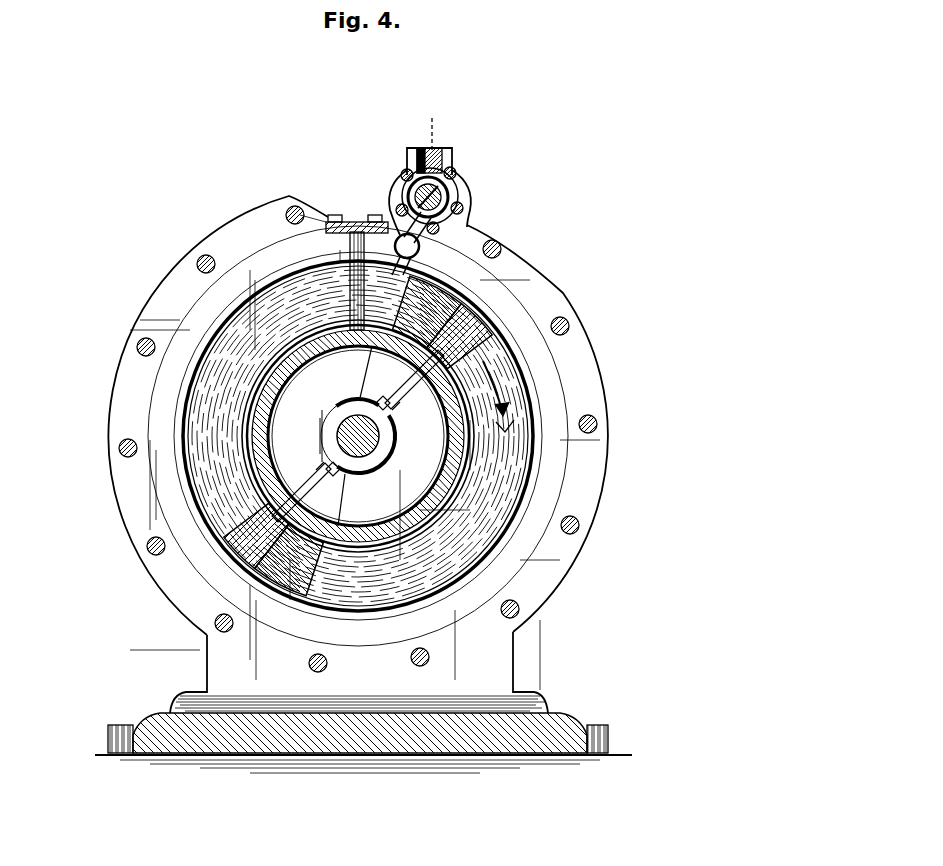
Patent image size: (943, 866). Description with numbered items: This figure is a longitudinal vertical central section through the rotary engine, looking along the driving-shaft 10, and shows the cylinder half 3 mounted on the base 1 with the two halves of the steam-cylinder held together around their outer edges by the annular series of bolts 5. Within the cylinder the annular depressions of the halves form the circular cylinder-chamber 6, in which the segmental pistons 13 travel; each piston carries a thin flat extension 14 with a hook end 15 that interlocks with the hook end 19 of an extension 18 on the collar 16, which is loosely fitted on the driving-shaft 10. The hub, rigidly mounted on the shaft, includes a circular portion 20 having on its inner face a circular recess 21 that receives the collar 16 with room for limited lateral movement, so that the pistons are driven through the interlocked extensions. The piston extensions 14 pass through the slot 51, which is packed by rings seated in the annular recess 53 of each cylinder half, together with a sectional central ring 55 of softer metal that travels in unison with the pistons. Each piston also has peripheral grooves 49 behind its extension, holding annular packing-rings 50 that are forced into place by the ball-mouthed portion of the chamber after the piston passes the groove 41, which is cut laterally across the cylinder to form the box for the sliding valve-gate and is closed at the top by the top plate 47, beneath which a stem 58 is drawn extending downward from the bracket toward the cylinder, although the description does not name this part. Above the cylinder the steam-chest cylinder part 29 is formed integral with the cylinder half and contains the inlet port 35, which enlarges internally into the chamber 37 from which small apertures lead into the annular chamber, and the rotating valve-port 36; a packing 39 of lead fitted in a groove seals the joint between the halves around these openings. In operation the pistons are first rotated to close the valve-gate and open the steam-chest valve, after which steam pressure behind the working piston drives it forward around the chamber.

The base 1 is at (200, 735).
The cylinder half 3 is at (483, 660).
The annular series of bolts 5 is at (204, 256).
The circular cylinder-chamber 6 is at (440, 562).
The driving-shaft 10 is at (362, 452).
The segmental pistons 13 is at (282, 493).
The flat extensions 14 is at (407, 383).
The hook ends 15 is at (362, 376).
The collar 16 is at (343, 407).
The collar extensions 18 is at (378, 398).
The hook ends of collar extensions 19 is at (357, 486).
The circular portion of hub 20 is at (275, 460).
The circular recess 21 is at (320, 418).
The steam-chest cylinder part 29 is at (462, 182).
The inlet port 35 is at (405, 212).
The rotating valve-port 36 is at (409, 196).
The chamber 37 is at (414, 247).
The packing 39 is at (470, 192).
The groove 41 is at (336, 253).
The top plate 47 is at (327, 216).
The peripheral grooves 49 is at (462, 333).
The annular packing-rings 50 is at (447, 284).
The slot 51 is at (460, 490).
The annular recess 53 is at (406, 170).
The central ring 55 is at (460, 452).
The stem 58 is at (352, 255).